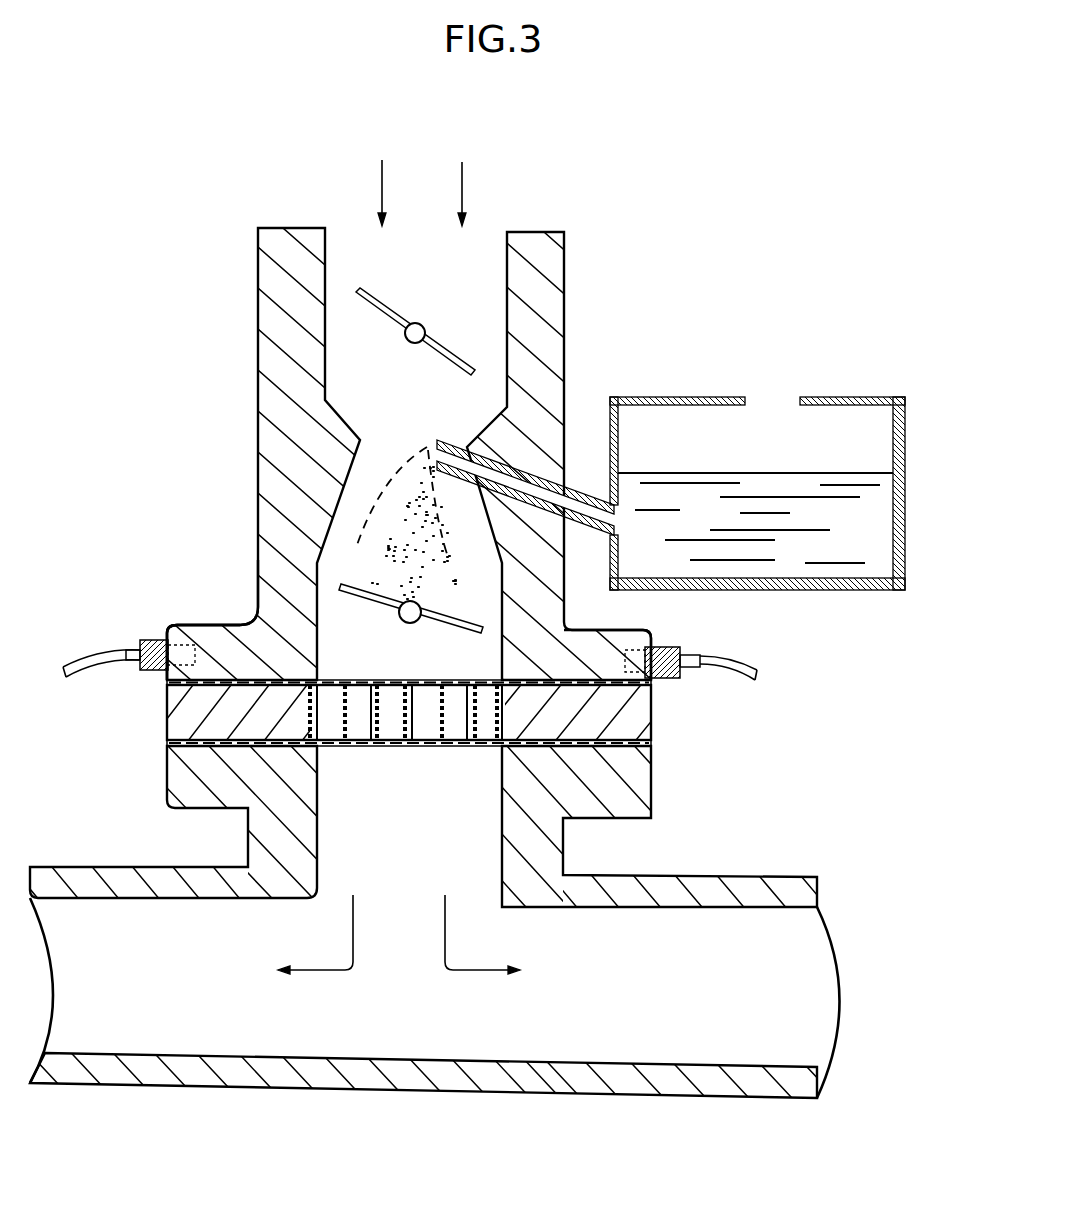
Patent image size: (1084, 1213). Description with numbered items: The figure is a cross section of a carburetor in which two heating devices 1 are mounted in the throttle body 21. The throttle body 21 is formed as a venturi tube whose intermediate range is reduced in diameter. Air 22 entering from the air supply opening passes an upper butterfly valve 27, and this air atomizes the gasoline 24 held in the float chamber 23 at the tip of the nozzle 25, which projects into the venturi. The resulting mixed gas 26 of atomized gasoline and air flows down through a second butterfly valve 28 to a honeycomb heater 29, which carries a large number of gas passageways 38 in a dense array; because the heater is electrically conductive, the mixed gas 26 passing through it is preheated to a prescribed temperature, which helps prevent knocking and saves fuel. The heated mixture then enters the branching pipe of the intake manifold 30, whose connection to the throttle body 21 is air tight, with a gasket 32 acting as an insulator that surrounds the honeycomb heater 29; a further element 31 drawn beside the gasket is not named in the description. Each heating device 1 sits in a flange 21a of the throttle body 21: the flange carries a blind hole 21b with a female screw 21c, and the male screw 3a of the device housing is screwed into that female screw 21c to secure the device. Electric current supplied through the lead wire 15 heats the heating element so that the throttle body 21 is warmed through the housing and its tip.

The heating device 1 is at (136, 628).
The male screw 3a is at (165, 675).
The lead wire 15 is at (92, 655).
The throttle body 21 is at (265, 502).
The flange 21a is at (218, 635).
The blind hole 21b is at (183, 640).
The female screw 21c is at (175, 715).
The air 22 is at (462, 180).
The float chamber 23 is at (688, 397).
The gasoline 24 is at (780, 473).
The nozzle 25 is at (540, 472).
The mixed gas 26 is at (365, 540).
The butterfly valve 27 is at (463, 352).
The butterfly valve 28 is at (351, 593).
The honeycomb heater 29 is at (256, 607).
The intake manifold 30 is at (75, 873).
The gasket 31 is at (167, 748).
The gasket 32 is at (167, 805).
The gas passageways 38 is at (423, 735).